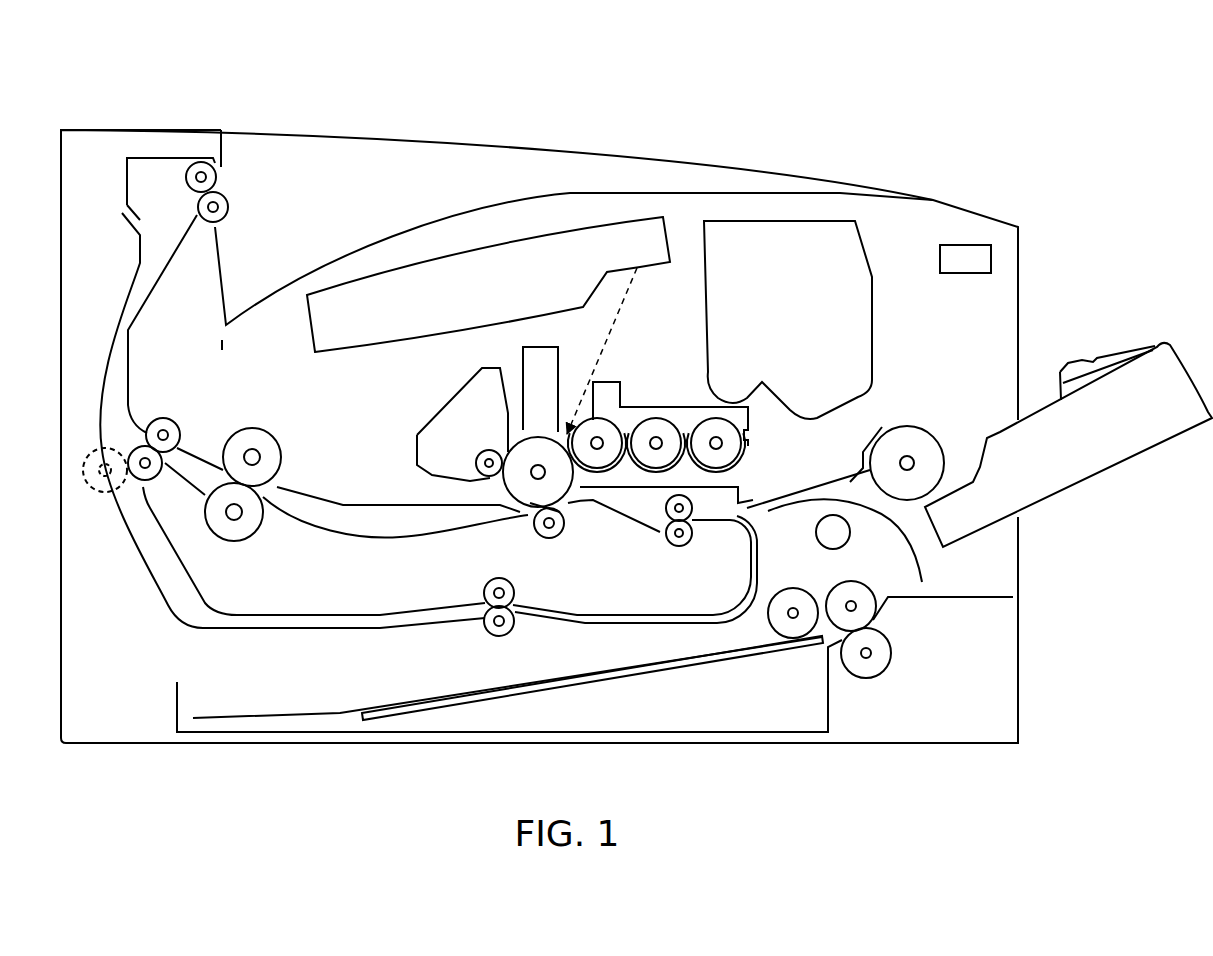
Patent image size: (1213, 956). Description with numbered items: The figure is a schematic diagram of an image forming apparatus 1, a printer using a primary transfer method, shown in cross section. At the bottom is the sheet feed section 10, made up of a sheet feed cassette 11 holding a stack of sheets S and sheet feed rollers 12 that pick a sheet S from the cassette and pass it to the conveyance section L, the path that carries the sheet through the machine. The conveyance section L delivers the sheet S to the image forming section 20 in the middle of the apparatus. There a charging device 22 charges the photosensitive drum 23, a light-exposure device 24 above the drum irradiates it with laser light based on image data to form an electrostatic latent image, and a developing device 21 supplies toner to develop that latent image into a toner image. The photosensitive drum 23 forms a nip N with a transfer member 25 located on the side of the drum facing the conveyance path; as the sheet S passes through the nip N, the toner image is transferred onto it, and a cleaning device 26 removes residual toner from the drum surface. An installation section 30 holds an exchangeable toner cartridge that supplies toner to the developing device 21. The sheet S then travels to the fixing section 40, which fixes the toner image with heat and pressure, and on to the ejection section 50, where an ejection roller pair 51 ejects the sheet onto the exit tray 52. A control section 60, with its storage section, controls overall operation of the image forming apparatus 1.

The image forming apparatus 1 is at (675, 136).
The sheet feed section 10 is at (763, 812).
The sheet feed cassette 11 is at (745, 718).
The sheet feed rollers 12 is at (859, 692).
The image forming section 20 is at (408, 410).
The developing device 21 is at (638, 402).
The charging device 22 is at (557, 390).
The photosensitive drum 23 is at (525, 493).
The light-exposure device 24 is at (533, 252).
The transfer member 25 is at (553, 542).
The cleaning device 26 is at (453, 395).
The installation section 30 is at (862, 242).
The fixing section 40 is at (261, 416).
The ejection section 50 is at (252, 173).
The ejection roller pair 51 is at (190, 165).
The exit tray 52 is at (415, 217).
The control section 60 is at (991, 252).
The conveyance section L is at (180, 391).
The nip N is at (575, 514).
The sheet S is at (413, 698).